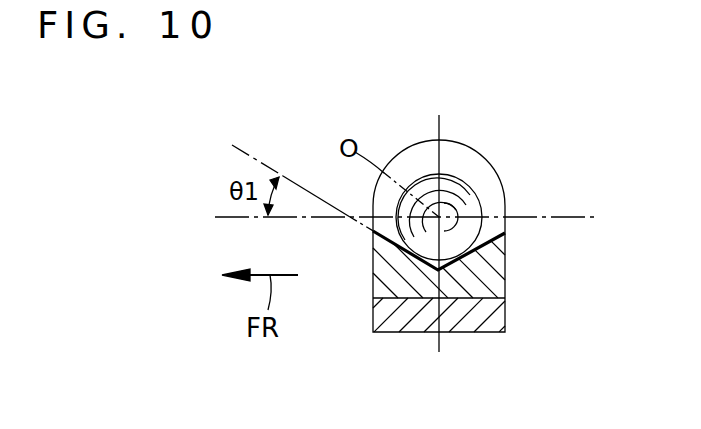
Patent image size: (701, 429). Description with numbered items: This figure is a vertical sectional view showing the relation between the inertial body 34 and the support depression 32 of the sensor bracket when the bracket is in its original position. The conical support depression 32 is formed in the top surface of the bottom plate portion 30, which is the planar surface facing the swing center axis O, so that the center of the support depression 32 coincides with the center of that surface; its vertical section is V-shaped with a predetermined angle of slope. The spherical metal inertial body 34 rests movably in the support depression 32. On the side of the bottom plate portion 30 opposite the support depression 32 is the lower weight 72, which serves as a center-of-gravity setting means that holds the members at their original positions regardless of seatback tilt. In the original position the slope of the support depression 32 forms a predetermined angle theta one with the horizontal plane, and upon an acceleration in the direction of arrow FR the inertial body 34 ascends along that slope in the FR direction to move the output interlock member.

The bottom plate portion 30 is at (505, 283).
The support depression 32 is at (505, 228).
The inertial body 34 is at (472, 197).
The lower weight 72 is at (505, 325).